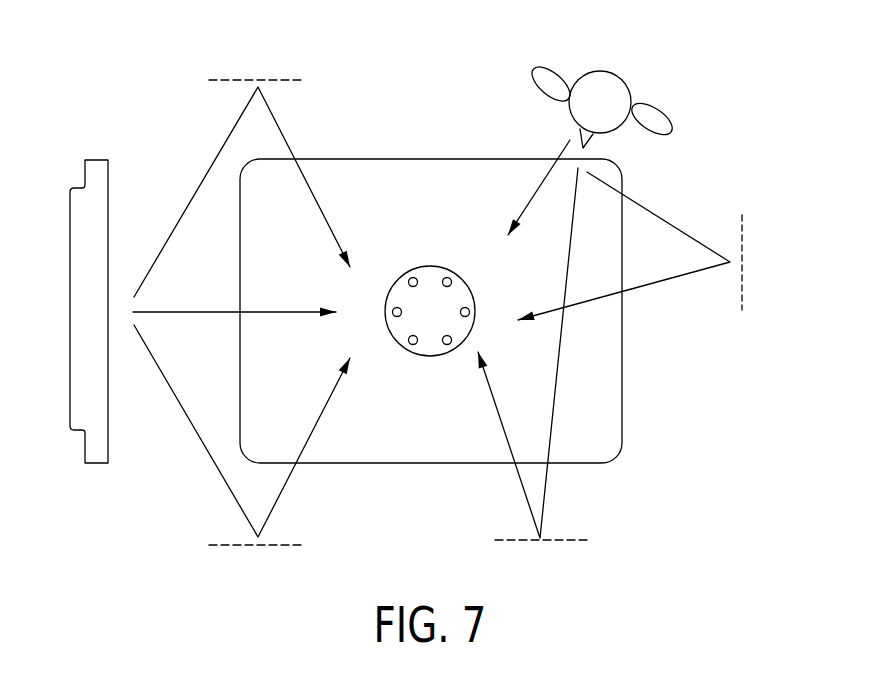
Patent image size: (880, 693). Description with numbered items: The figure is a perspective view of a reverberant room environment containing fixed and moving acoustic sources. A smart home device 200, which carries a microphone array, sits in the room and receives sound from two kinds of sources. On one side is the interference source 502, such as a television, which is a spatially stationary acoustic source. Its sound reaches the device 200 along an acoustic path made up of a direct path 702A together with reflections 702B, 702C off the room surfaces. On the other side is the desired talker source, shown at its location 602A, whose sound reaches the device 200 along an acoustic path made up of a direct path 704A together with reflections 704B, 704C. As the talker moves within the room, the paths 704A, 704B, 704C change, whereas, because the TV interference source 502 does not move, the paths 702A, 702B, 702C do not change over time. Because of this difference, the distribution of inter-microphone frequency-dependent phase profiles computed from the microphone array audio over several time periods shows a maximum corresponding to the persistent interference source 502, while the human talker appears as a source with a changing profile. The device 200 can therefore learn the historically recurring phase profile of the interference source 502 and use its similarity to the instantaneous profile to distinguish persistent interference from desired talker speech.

The interference source 502 is at (110, 453).
The direct path 702A is at (277, 122).
The reflection 702B is at (188, 310).
The reflection 702C is at (185, 407).
The smart home device 200 is at (386, 318).
The location of desired talker source 602A is at (630, 83).
The direct path 704A is at (533, 192).
The reflection 704B is at (692, 233).
The reflection 704C is at (517, 482).